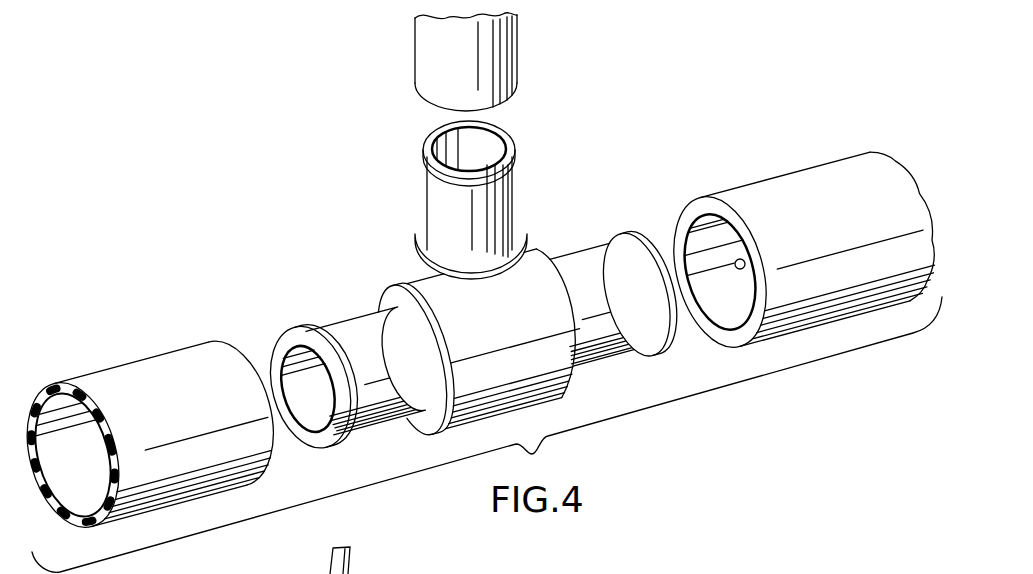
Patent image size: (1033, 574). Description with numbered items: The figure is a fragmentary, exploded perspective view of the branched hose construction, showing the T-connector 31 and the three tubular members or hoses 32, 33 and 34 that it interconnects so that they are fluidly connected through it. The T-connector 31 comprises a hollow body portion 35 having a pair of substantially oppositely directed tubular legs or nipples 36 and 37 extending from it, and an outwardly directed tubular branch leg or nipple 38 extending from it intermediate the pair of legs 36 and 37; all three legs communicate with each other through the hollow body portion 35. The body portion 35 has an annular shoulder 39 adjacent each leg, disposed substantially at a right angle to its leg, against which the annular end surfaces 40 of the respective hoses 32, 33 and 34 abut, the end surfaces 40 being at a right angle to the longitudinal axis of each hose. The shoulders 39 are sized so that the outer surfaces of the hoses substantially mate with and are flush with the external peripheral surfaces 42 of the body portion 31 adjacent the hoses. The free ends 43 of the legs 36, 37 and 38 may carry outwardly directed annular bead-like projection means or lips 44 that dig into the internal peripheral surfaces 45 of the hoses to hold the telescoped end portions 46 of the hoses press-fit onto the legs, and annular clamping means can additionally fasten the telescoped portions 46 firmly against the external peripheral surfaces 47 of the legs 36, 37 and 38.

The T-connector 31 is at (473, 294).
The tubular member or hose 32 is at (123, 360).
The tubular member or hose 33 is at (790, 172).
The tubular member or hose 34 is at (518, 43).
The hollow body portion 35 is at (520, 250).
The tubular leg or nipple 36 is at (320, 312).
The tubular leg or nipple 37 is at (592, 250).
The tubular branch leg or nipple 38 is at (514, 175).
The annular shoulder 39 is at (423, 242).
The annular end surface 40 is at (427, 104).
The external peripheral surface of the body portion 42 is at (452, 425).
The free end of the leg 43 is at (496, 135).
The annular bead-like projection means or lip 44 is at (428, 150).
The internal peripheral surface 45 is at (742, 259).
The telescoped end portion 46 is at (520, 78).
The external peripheral surface of the leg 47 is at (427, 190).